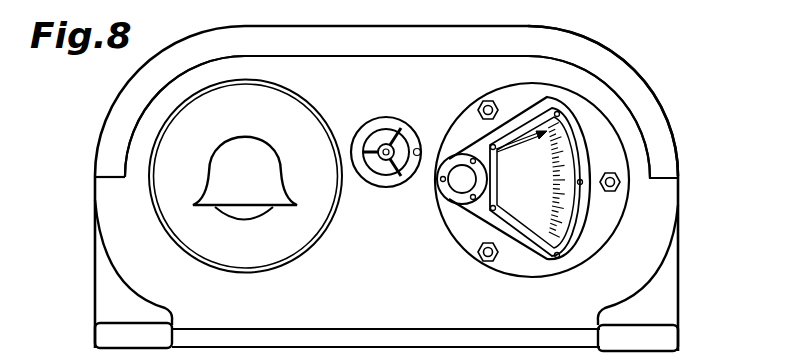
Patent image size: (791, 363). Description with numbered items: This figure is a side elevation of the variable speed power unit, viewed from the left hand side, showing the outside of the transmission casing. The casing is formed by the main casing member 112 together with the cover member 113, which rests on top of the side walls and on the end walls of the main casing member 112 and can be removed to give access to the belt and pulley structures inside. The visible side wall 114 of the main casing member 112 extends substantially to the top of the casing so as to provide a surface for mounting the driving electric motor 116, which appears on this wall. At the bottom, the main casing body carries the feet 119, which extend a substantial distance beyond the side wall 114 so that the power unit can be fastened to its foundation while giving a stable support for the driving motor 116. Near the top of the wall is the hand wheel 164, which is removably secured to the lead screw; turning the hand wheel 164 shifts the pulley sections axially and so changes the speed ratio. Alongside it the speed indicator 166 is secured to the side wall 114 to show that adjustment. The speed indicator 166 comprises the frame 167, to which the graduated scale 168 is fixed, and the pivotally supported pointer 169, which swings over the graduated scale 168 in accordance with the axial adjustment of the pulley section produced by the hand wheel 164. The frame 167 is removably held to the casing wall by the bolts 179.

The main casing member 112 is at (679, 240).
The cover member 113 is at (673, 132).
The side wall 114 is at (397, 87).
The driving electric motor 116 is at (322, 233).
The feet 119 is at (118, 326).
The hand wheel 164 is at (373, 127).
The speed indicator 166 is at (572, 230).
The frame 167 is at (523, 270).
The graduated scale 168 is at (552, 240).
The pointer 169 is at (525, 151).
The bolts 179 is at (615, 187).